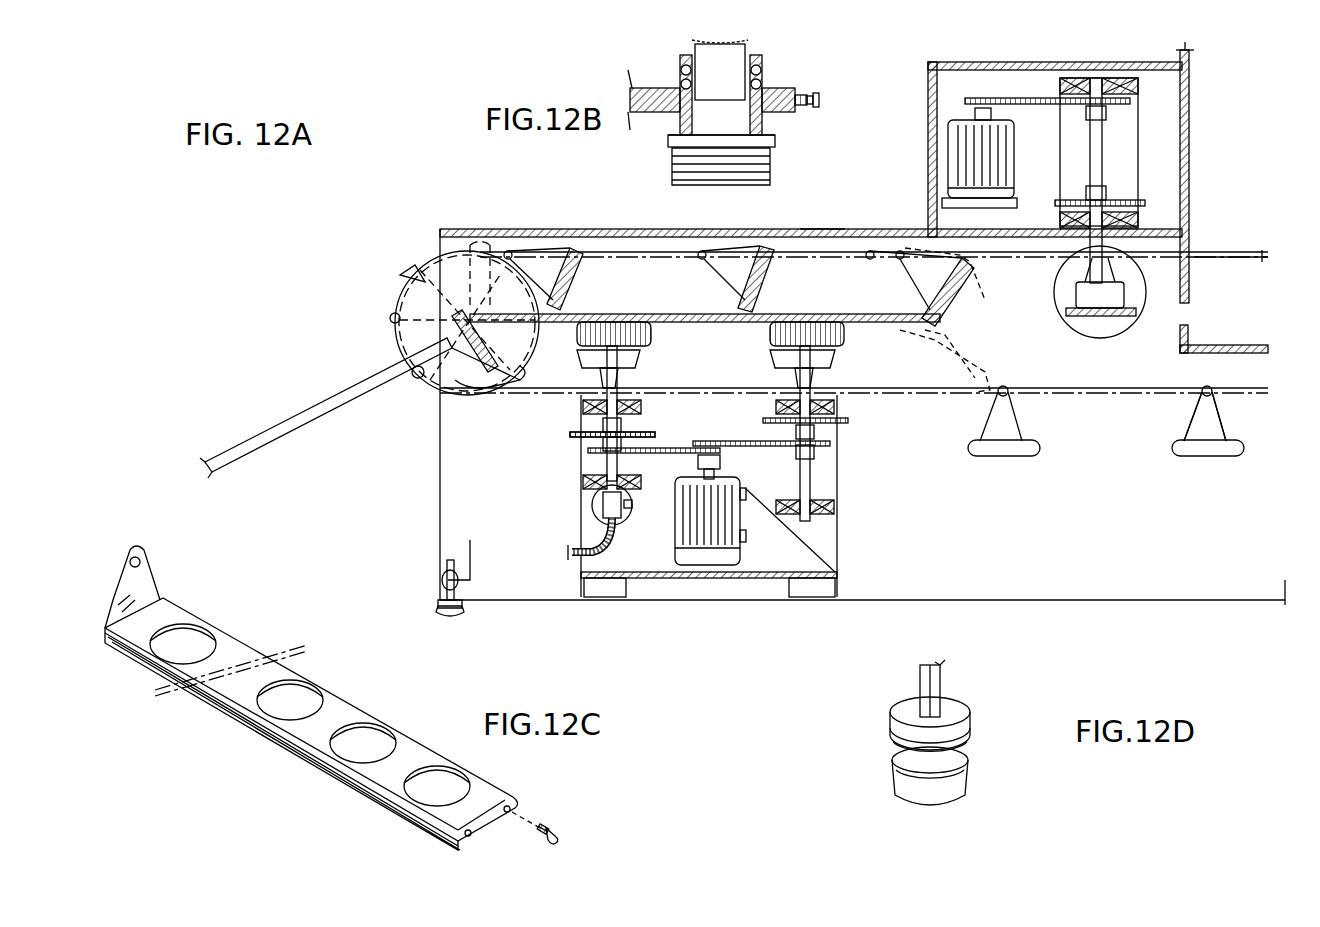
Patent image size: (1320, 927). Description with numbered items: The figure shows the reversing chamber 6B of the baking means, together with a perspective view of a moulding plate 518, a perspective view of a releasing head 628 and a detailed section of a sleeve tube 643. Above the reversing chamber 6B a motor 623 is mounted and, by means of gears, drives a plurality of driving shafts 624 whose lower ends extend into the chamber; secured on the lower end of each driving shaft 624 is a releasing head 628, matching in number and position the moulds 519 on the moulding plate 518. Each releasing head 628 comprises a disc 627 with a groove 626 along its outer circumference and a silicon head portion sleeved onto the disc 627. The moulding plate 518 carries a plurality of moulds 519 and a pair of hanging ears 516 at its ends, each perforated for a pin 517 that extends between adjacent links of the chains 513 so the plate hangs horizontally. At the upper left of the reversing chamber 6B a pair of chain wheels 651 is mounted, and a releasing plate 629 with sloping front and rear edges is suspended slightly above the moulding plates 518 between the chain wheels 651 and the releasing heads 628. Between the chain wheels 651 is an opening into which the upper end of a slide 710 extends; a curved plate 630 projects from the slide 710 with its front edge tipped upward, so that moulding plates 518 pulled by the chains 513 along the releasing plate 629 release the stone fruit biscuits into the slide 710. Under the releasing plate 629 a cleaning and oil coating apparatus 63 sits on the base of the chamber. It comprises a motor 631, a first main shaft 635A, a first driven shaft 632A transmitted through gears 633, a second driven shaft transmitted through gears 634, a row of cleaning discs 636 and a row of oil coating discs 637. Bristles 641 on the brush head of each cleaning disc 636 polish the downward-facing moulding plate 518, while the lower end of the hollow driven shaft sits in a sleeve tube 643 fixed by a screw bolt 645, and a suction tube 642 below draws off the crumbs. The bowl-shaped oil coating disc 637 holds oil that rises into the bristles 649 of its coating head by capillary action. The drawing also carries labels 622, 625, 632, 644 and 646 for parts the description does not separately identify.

In FIG. 12A, the chains 513 is at (1210, 257).
In FIG. 12A, the hanging ears 516 is at (1205, 408).
In FIG. 12C, the hanging ears 516 is at (145, 582).
In FIG. 12C, the pump 517 is at (552, 832).
In FIG. 12A, the moulding plate 518 is at (812, 328).
In FIG. 12C, the moulding plate 518 is at (237, 700).
In FIG. 12C, the moulds 519 is at (372, 748).
In FIG. 12A, the frame bracket 622 is at (1186, 313).
In FIG. 12A, the motor 623 is at (975, 148).
In FIG. 12A, the driving shafts 624 is at (1100, 152).
In FIG. 12A, the sprocket 625 is at (1075, 203).
In FIG. 12D, the groove 626 is at (968, 738).
In FIG. 12D, the disc 627 is at (905, 717).
In FIG. 12A, the releasing head 628 is at (1088, 295).
In FIG. 12D, the releasing head 628 is at (905, 792).
In FIG. 12A, the releasing plate 629 is at (680, 314).
In FIG. 12A, the curved plate 630 is at (493, 376).
In FIG. 12A, the motor 631 is at (714, 560).
In FIG. 12A, the drive chain 632 is at (812, 472).
In FIG. 12A, the first driven shaft 632A is at (600, 480).
In FIG. 12A, the gears 633 is at (590, 434).
In FIG. 12A, the gears 634 is at (850, 420).
In FIG. 12B, the first main shaft 635A is at (685, 56).
In FIG. 12A, the cleaning discs 636 is at (625, 358).
In FIG. 12A, the oil coating discs 637 is at (790, 358).
In FIG. 12A, the bristles 641 is at (607, 325).
In FIG. 12A, the suction tube 642 is at (568, 553).
In FIG. 12A, the sleeve tube 643 is at (605, 516).
In FIG. 12B, the sleeve tube 643 is at (762, 80).
In FIG. 12B, the ball bearing 644 is at (698, 78).
In FIG. 12B, the screw bolt 645 is at (815, 108).
In FIG. 12B, the mounting flange 646 is at (660, 112).
In FIG. 12A, the bristles 649 is at (815, 348).
In FIG. 12A, the chain wheels 651 is at (460, 272).
In FIG. 12A, the slide 710 is at (325, 393).
In FIG. 12A, the cleaning and oil coating apparatus 63 is at (836, 532).
In FIG. 12A, the reversing chamber 6B is at (820, 232).